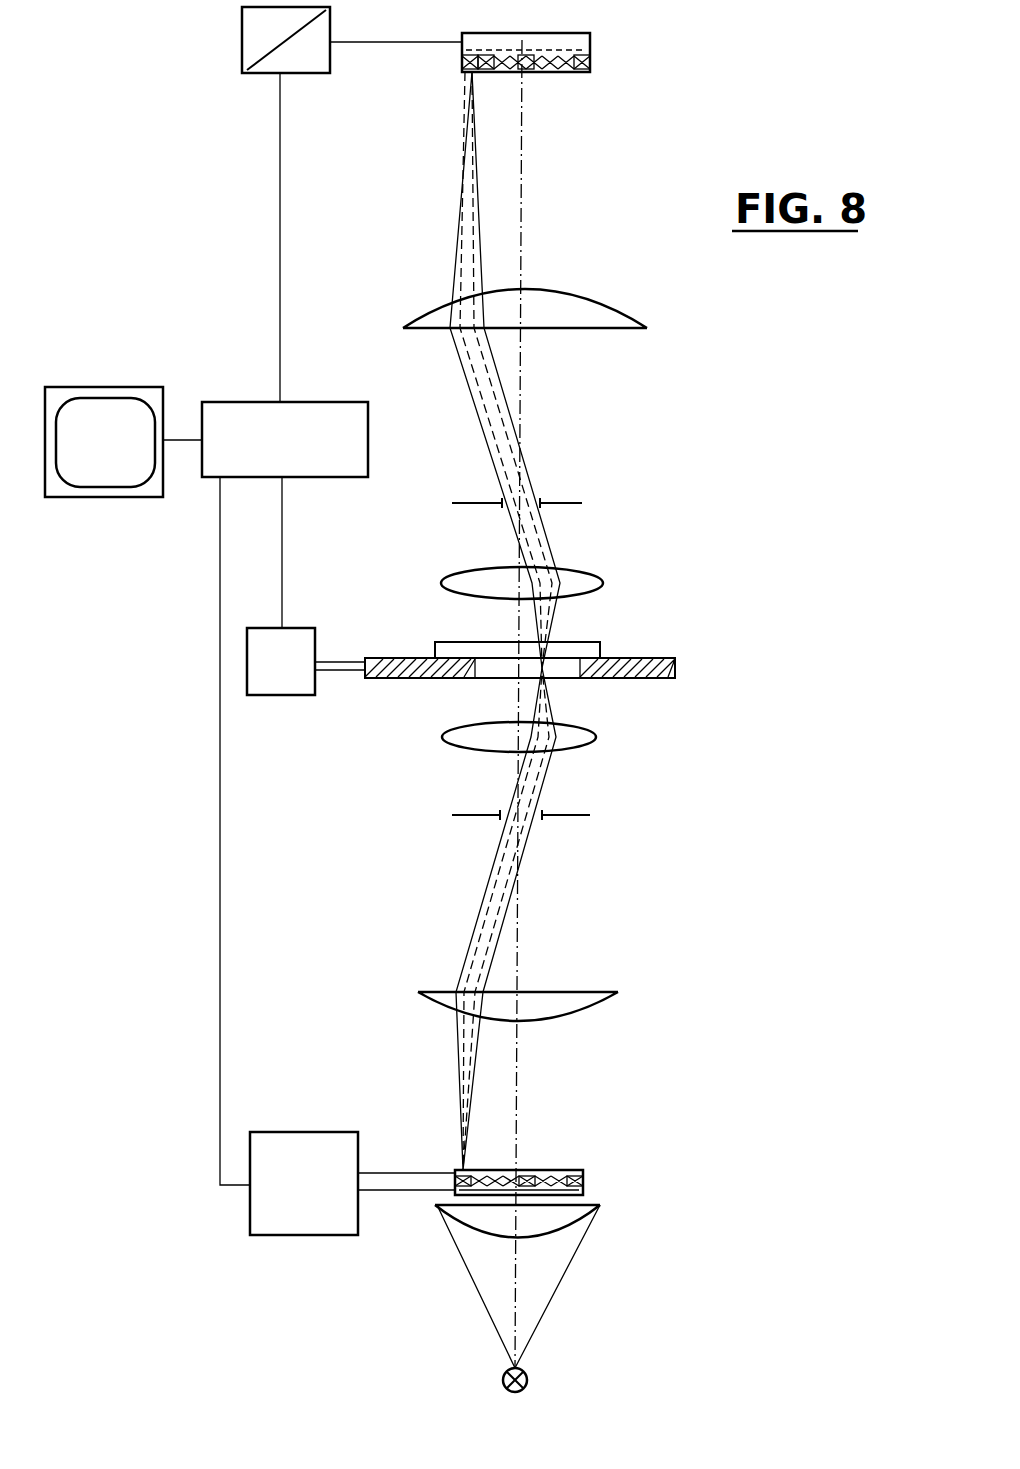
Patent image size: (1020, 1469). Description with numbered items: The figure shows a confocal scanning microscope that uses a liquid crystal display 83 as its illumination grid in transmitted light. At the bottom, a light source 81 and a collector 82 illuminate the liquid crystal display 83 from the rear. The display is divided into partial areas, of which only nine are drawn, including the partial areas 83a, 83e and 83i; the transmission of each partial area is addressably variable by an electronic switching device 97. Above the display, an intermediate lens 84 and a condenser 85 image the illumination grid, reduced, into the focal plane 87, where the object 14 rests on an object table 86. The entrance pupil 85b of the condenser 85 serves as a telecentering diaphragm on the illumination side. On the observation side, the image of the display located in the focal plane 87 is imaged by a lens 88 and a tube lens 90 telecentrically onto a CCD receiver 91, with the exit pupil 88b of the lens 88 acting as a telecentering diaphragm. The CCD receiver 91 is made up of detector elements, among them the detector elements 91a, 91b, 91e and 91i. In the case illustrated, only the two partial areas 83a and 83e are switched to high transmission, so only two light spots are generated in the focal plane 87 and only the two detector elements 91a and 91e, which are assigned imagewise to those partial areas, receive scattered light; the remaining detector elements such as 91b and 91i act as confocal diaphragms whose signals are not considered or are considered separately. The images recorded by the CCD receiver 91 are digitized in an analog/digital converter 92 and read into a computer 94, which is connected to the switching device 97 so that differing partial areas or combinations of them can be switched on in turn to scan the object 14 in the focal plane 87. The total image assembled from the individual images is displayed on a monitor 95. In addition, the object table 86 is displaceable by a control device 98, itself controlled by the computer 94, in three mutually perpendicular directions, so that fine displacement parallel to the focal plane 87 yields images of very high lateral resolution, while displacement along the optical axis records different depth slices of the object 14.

The object 14 is at (602, 652).
The light source 81 is at (503, 1380).
The collector 82 is at (585, 1216).
The liquid crystal display 83 is at (605, 1183).
The partial area 83a is at (455, 1170).
The partial area 83e is at (522, 1172).
The partial area 83i is at (575, 1170).
The intermediate lens 84 is at (578, 1002).
The condenser 85 is at (585, 745).
The entrance pupil 85b is at (590, 815).
The object table 86 is at (676, 679).
The focal plane 87 is at (676, 659).
The lens 88 is at (578, 575).
The exit pupil 88b is at (582, 503).
The tube lens 90 is at (618, 324).
The CCD receiver 91 is at (600, 60).
The detector element 91a is at (462, 63).
The detector element 91b is at (490, 72).
The detector element 91e is at (527, 72).
The detector element 91i is at (585, 72).
The analog/digital converter 92 is at (318, 74).
The computer 94 is at (317, 402).
The monitor 95 is at (122, 397).
The switching device 97 is at (295, 1236).
The control device 98 is at (292, 645).